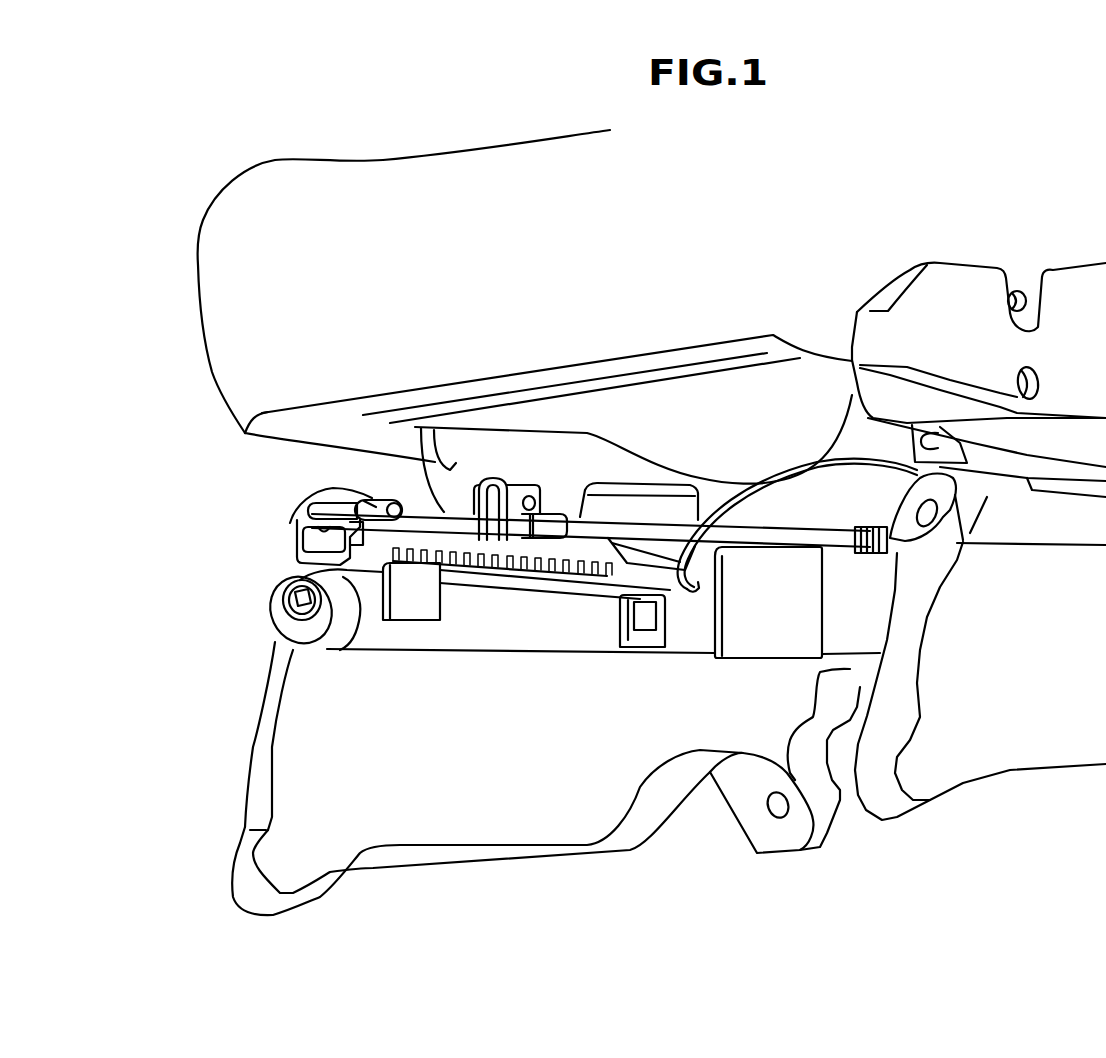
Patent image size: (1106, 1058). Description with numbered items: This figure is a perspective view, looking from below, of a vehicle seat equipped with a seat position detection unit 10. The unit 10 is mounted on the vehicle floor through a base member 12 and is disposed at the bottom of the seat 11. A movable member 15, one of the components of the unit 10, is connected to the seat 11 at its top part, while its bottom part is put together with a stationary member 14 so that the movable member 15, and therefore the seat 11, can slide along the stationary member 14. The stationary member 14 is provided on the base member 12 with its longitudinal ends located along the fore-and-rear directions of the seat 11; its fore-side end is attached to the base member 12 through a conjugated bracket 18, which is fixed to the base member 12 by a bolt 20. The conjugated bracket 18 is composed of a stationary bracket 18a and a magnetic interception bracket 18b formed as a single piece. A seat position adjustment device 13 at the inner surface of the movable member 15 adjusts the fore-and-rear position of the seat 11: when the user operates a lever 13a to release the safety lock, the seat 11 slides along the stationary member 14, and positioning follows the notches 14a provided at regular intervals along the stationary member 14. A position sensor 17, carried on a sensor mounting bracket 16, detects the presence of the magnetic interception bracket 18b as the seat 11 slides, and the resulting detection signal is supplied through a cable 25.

The seat position detection unit 10 is at (273, 482).
The seat 11 is at (222, 390).
The base member 12 is at (255, 703).
The seat position adjustment device 13 is at (461, 530).
The lever 13a is at (292, 505).
The stationary member 14 is at (531, 630).
The notches 14a is at (517, 562).
The movable member 15 is at (420, 463).
The sensor mounting bracket 16 is at (793, 603).
The position sensor 17 is at (677, 617).
The conjugated bracket 18 is at (298, 641).
The stationary bracket 18a is at (280, 618).
The magnetic interception bracket 18b is at (417, 620).
The bolt 20 is at (290, 587).
The cable 25 is at (833, 460).